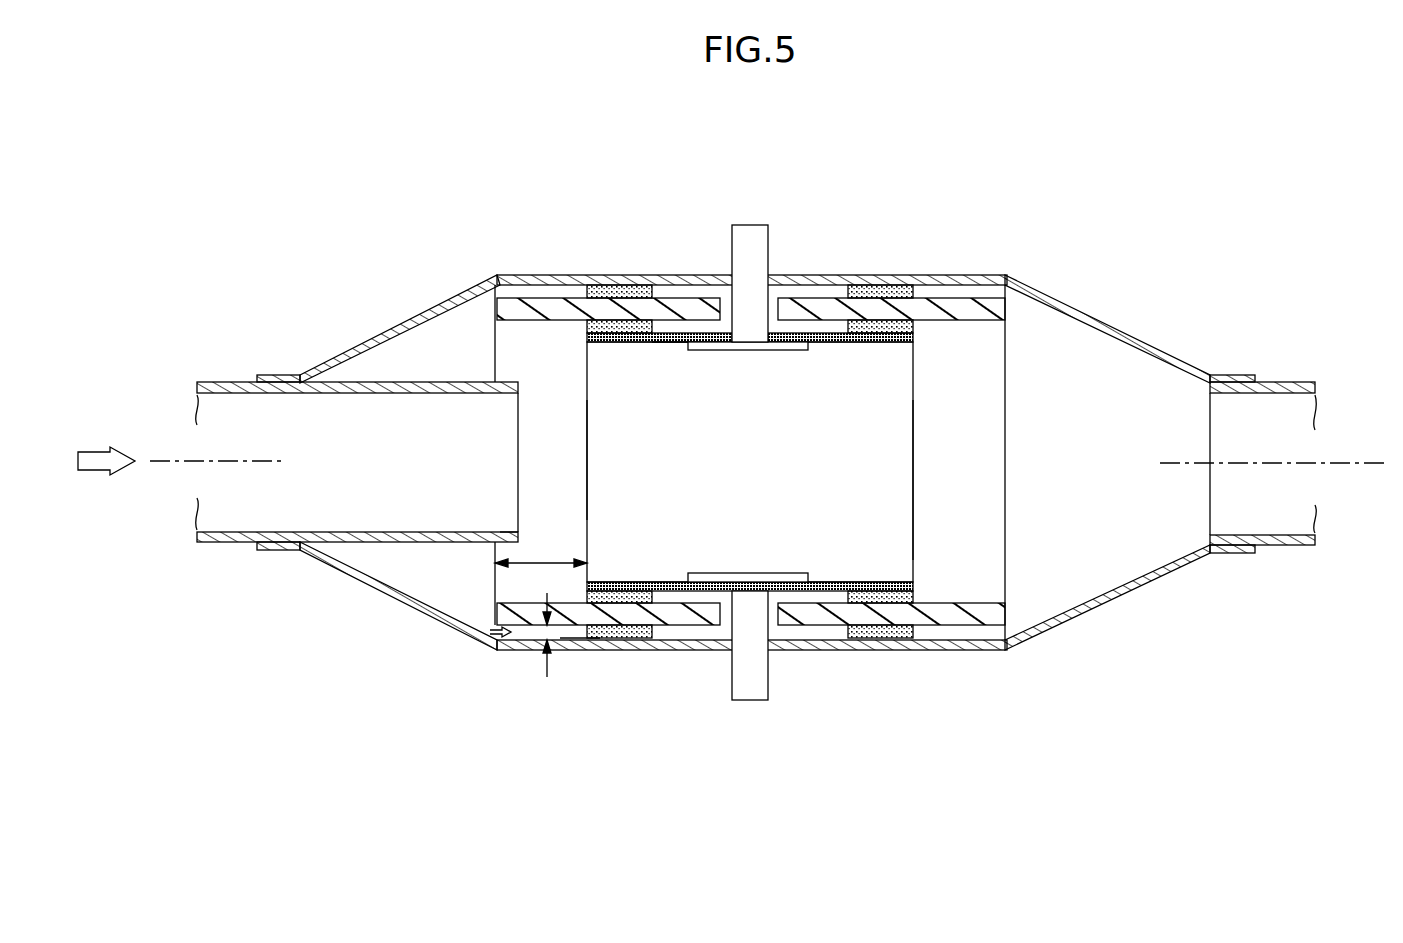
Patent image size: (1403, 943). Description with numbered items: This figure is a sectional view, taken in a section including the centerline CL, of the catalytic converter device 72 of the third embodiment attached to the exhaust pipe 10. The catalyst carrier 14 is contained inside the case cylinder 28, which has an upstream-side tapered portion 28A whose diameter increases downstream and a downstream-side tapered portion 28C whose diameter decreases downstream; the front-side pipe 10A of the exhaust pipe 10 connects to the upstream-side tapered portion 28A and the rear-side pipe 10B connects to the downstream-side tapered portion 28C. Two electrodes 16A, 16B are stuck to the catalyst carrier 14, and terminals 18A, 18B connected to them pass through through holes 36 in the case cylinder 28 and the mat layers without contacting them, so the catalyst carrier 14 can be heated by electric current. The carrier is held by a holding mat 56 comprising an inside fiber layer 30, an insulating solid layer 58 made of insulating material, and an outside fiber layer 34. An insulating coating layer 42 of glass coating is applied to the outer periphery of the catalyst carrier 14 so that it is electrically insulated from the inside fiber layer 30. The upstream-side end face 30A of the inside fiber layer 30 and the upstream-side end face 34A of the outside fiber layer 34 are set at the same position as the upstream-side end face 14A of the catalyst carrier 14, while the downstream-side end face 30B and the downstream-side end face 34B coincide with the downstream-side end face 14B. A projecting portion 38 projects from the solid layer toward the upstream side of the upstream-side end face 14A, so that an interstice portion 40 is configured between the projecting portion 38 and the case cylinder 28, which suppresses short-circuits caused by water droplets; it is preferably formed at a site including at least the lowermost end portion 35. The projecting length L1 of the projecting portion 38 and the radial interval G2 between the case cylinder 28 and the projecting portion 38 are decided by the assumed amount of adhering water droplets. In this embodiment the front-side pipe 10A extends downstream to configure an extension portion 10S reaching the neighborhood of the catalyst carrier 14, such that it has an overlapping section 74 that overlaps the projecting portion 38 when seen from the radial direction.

The catalytic converter device 72 is at (912, 160).
The exhaust pipe 10 is at (181, 461).
The front-side pipe 10A is at (232, 380).
The extension portion 10S is at (508, 378).
The rear-side pipe 10B is at (1282, 380).
The centerline CL is at (1338, 462).
The case cylinder 28 is at (1150, 342).
The upstream-side tapered portion 28A is at (410, 315).
The downstream-side tapered portion 28C is at (1083, 310).
The projecting portion 38 is at (493, 613).
The upstream-side end face of the outside fiber layer 34A is at (580, 290).
The downstream-side end face of the outside fiber layer 34B is at (928, 278).
The outside fiber layer 34 is at (857, 633).
The insulating solid layer 58 is at (890, 617).
The holding mat 56 is at (1003, 718).
The through holes 36 is at (673, 288).
The upstream-side end face of the inside fiber layer 30A is at (585, 328).
The downstream-side end face of the inside fiber layer 30B is at (915, 334).
The inside fiber layer 30 is at (942, 603).
The insulating coating layer 42 is at (672, 347).
The lowermost end portion 35 is at (578, 632).
The catalyst carrier 14 is at (916, 447).
The upstream-side end face of the catalyst carrier 14A is at (586, 452).
The downstream-side end face of the catalyst carrier 14B is at (915, 522).
The electrode 16A is at (743, 352).
The electrode 16B is at (795, 573).
The terminal 18A is at (768, 243).
The terminal 18B is at (732, 680).
The overlapping section 74 is at (505, 533).
The projecting length L1 is at (541, 539).
The radial interval G2 is at (543, 650).
The interstice portion 40 is at (478, 643).